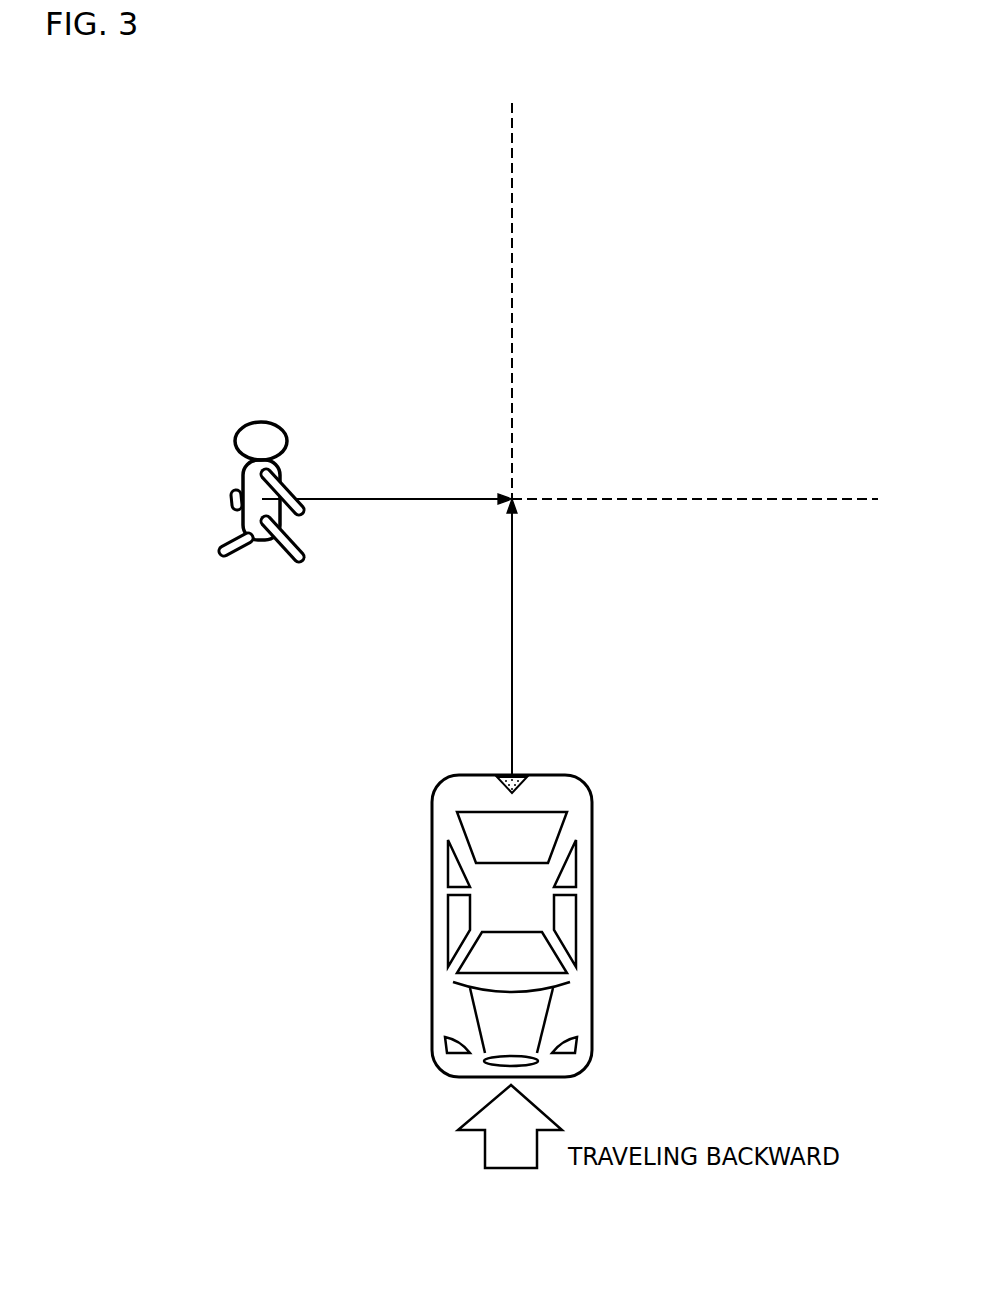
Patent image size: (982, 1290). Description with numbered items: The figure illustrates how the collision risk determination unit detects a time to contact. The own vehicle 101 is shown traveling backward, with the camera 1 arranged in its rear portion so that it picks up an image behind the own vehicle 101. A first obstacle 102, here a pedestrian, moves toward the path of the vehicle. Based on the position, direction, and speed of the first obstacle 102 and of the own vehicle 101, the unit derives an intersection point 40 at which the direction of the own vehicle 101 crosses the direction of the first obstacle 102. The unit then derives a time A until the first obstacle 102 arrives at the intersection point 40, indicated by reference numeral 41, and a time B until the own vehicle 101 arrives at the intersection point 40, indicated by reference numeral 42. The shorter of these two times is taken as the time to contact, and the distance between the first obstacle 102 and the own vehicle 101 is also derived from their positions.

The camera 1 is at (520, 773).
The intersection point 40 is at (512, 497).
The time A until the first obstacle arrives at the intersection point 41 is at (397, 501).
The time B until the own vehicle arrives at the intersection point 42 is at (512, 603).
The own vehicle 101 is at (593, 903).
The first obstacle 102 is at (246, 421).